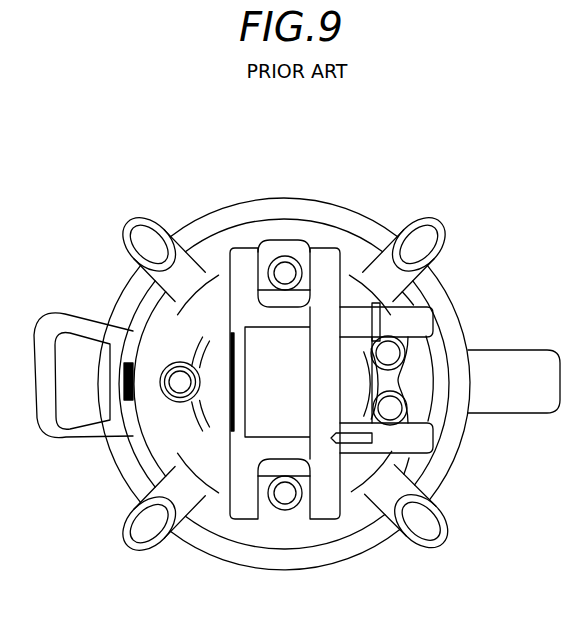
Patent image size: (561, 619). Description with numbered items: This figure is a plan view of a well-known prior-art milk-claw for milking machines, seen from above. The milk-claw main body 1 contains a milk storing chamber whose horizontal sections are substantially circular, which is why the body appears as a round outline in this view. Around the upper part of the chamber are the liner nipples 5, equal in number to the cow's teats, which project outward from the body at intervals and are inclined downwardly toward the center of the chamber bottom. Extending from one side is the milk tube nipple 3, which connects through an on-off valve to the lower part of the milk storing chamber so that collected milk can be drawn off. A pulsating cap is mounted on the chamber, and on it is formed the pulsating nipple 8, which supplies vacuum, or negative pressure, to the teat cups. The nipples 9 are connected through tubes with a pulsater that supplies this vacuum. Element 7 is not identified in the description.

The milk-claw main body 1 is at (222, 198).
The milk tube nipple 3 is at (523, 413).
The liner nipples 5 is at (443, 252).
The plate 7 is at (230, 363).
The pulsating nipple 8 is at (258, 250).
The nipples 9 is at (427, 318).